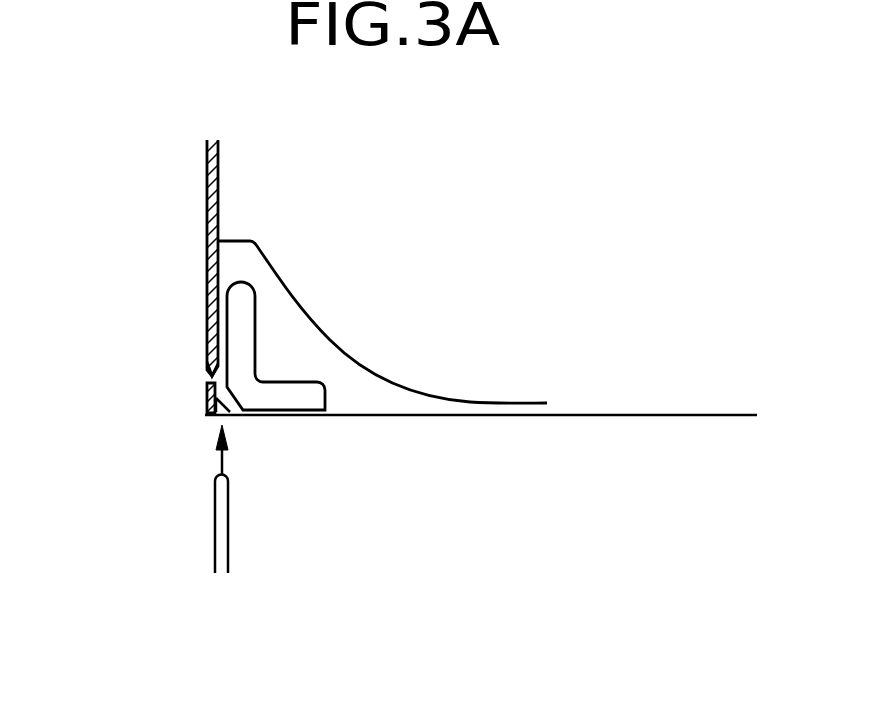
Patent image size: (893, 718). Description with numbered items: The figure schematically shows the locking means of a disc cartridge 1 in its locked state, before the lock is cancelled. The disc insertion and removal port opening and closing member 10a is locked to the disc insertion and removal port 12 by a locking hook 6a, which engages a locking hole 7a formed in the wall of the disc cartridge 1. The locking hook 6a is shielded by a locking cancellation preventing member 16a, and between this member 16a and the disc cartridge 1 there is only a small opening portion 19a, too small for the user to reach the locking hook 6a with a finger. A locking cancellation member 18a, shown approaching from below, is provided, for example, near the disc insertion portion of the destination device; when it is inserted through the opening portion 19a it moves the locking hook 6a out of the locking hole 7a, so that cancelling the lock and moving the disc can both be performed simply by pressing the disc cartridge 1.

The disc cartridge 1 is at (207, 182).
The locking hole 7a is at (206, 366).
The locking hook 6a is at (207, 377).
The opening portion 19a is at (218, 416).
The locking cancellation preventing member 16a is at (289, 412).
The disc insertion and removal port opening and closing member 10a is at (430, 403).
The disc insertion and removal port 12 is at (583, 415).
The locking cancellation member 18a is at (222, 535).